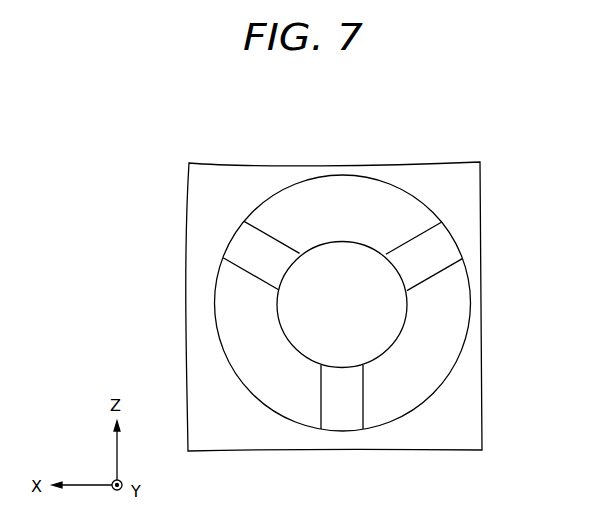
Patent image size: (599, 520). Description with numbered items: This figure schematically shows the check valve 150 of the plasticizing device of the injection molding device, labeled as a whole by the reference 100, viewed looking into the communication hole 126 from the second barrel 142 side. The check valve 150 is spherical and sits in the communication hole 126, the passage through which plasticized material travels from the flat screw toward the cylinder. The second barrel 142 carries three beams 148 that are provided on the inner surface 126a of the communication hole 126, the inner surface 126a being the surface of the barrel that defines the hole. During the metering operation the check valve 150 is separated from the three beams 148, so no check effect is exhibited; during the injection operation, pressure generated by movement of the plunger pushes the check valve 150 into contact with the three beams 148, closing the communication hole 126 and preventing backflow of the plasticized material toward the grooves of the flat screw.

The vibration actuator / apparatus 100 is at (508, 149).
The second barrel 142 is at (447, 198).
The communication hole 126 is at (340, 214).
The inner surface 126a is at (237, 378).
The beams 148 is at (248, 248).
The check valve 150 is at (362, 326).